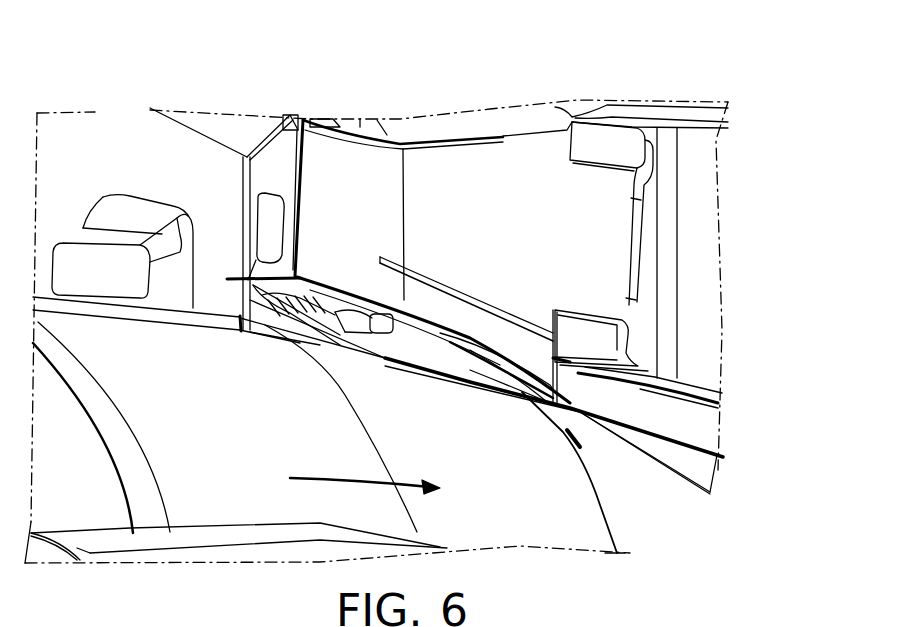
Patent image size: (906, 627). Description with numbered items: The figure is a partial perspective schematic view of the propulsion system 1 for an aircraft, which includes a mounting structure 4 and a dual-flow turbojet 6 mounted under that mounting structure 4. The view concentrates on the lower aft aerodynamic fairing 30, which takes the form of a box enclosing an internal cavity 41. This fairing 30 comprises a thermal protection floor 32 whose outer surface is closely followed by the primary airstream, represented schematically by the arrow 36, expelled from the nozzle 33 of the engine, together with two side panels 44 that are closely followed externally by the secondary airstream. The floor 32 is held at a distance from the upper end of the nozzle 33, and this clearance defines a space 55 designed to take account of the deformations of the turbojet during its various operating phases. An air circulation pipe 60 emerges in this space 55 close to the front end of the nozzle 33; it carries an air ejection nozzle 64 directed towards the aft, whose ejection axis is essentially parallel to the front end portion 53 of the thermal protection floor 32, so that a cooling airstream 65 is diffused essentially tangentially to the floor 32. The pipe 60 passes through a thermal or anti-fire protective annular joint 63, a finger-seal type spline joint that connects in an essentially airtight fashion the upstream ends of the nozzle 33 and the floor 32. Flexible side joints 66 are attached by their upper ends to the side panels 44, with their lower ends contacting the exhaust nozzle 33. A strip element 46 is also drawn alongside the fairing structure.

The propulsion system 1 is at (350, 110).
The mounting structure 4 is at (680, 108).
The dual-flow turbojet 6 is at (88, 103).
The lower aft aerodynamic fairing 30 is at (693, 147).
The thermal protection floor 32 is at (706, 490).
The nozzle 33 is at (617, 535).
The primary airstream arrow 36 is at (325, 478).
The internal cavity 41 is at (478, 216).
The side panels 44 is at (706, 328).
The upper bracket strip 46 is at (648, 233).
The front end portion of thermal protection floor 53 is at (460, 338).
The space 55 is at (431, 353).
The air circulation pipe 60 is at (270, 200).
The protective annular joint 63 is at (325, 295).
The air ejection nozzle 64 is at (378, 316).
The cooling airstream 65 is at (366, 189).
The flexible side joints 66 is at (565, 430).